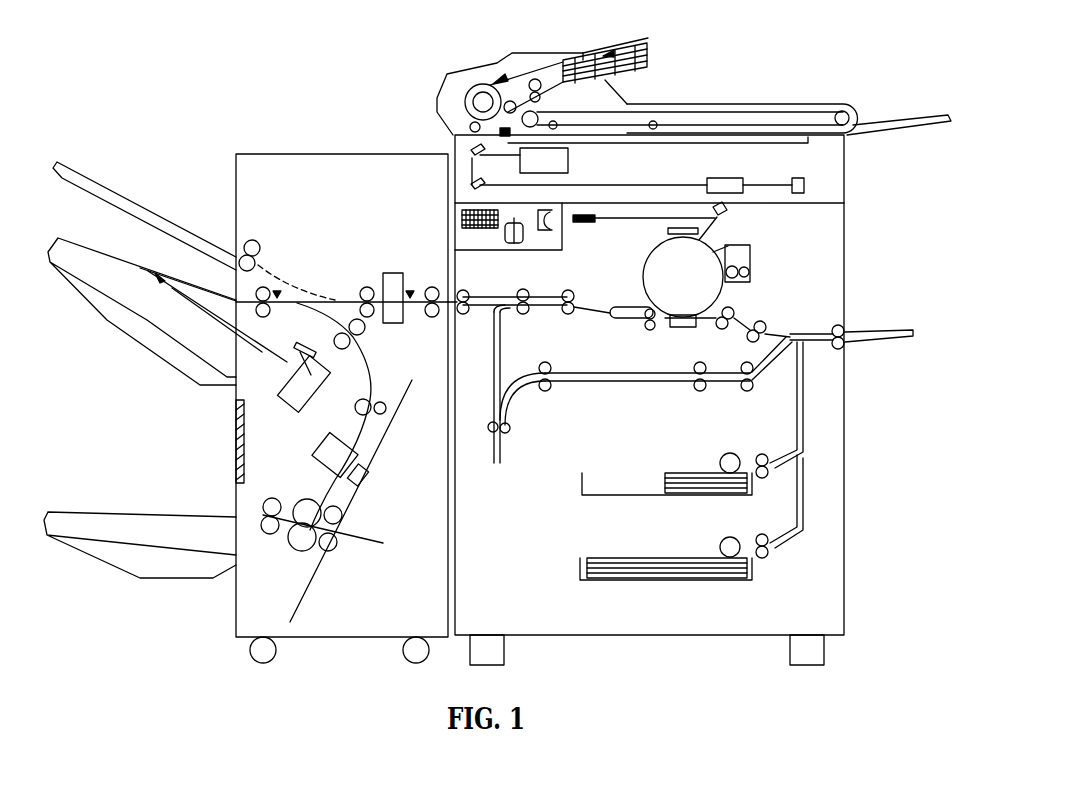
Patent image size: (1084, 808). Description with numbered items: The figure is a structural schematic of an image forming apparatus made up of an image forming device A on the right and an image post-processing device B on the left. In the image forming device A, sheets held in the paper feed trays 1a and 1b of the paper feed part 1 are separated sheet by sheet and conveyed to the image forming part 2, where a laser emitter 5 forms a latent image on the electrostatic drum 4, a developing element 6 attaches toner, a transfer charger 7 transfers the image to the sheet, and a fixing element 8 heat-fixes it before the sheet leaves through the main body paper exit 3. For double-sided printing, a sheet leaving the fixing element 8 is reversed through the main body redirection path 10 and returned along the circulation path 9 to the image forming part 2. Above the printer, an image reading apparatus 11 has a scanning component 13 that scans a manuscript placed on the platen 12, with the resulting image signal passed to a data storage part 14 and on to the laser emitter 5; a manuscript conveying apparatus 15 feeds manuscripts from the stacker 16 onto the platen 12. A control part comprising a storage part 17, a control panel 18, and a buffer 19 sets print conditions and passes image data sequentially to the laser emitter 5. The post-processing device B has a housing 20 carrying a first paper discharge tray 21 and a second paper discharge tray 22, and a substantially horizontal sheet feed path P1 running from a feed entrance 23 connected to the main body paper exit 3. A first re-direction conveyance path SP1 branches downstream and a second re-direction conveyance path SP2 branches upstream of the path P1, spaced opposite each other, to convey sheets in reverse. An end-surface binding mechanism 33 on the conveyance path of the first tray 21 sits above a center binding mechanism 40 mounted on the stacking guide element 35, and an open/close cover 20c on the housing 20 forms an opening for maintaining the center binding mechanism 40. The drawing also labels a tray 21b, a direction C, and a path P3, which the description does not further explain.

The paper feed part 1 is at (630, 516).
The paper feed tray 1a is at (580, 477).
The paper feed tray 1b is at (578, 561).
The image forming part 2 is at (778, 270).
The main body paper exit 3 is at (456, 321).
The electrostatic drum 4 is at (653, 263).
The laser emitter 5 is at (584, 222).
The developing element 6 is at (750, 246).
The transfer charger 7 is at (678, 328).
The fixing element 8 is at (572, 311).
The circulation path 9 is at (610, 377).
The main body redirection path 10 is at (508, 418).
The image reading apparatus 11 is at (845, 177).
The platen 12 is at (740, 137).
The scanning component 13 is at (556, 160).
The data storage part 14 is at (720, 180).
The manuscript conveying apparatus 15 is at (512, 53).
The stacker 16 is at (647, 55).
The storage part 17 is at (516, 243).
The control panel 18 is at (483, 228).
The buffer 19 is at (540, 231).
The housing 20 is at (326, 154).
The open/close cover 20c is at (236, 432).
The first paper discharge tray 21 is at (68, 253).
The upper tray 21b is at (72, 168).
The second paper discharge tray 22 is at (115, 517).
The feed entrance 23 is at (438, 290).
The end-surface binding mechanism 33 is at (290, 408).
The stacking guide element 35 is at (308, 568).
The center binding mechanism 40 is at (367, 477).
The image forming device A is at (707, 88).
The image post-processing device B is at (210, 141).
The sheet conveyance direction C is at (302, 478).
The sheet feed path P1 is at (355, 292).
The third conveyance path P3 is at (270, 268).
The first re-direction conveyance path SP1 is at (252, 337).
The second re-direction conveyance path SP2 is at (372, 367).